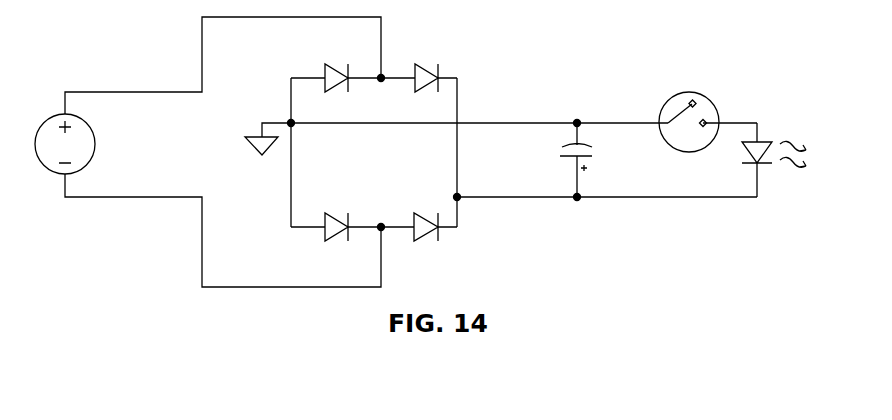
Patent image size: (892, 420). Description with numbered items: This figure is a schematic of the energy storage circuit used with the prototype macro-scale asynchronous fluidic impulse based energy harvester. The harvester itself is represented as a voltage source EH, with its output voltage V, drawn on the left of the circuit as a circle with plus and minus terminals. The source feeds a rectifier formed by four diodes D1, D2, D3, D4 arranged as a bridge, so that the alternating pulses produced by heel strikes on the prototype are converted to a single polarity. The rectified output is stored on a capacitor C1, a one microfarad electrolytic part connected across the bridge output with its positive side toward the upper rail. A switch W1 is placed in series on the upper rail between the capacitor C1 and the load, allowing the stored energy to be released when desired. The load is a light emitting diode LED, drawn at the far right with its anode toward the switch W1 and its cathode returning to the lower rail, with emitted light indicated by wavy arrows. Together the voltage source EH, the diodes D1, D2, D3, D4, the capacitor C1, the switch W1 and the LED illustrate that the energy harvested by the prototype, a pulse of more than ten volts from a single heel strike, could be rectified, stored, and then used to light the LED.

The energy harvester voltage source EH is at (208, 152).
The source voltage V is at (95, 191).
The bridge rectifier diode D1 is at (424, 216).
The bridge rectifier diode D2 is at (334, 216).
The bridge rectifier diode D3 is at (424, 67).
The bridge rectifier diode D4 is at (334, 67).
The 1 uF storage capacitor C1 is at (557, 157).
The switch W1 is at (704, 124).
The light emitting diode LED is at (774, 156).